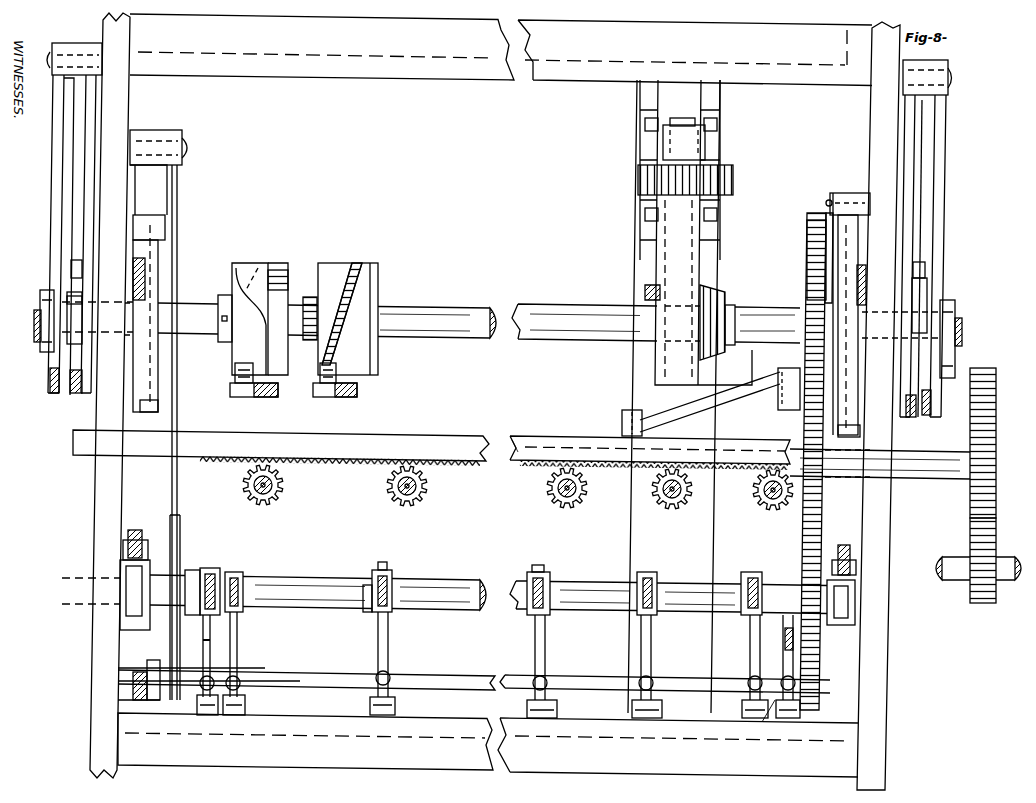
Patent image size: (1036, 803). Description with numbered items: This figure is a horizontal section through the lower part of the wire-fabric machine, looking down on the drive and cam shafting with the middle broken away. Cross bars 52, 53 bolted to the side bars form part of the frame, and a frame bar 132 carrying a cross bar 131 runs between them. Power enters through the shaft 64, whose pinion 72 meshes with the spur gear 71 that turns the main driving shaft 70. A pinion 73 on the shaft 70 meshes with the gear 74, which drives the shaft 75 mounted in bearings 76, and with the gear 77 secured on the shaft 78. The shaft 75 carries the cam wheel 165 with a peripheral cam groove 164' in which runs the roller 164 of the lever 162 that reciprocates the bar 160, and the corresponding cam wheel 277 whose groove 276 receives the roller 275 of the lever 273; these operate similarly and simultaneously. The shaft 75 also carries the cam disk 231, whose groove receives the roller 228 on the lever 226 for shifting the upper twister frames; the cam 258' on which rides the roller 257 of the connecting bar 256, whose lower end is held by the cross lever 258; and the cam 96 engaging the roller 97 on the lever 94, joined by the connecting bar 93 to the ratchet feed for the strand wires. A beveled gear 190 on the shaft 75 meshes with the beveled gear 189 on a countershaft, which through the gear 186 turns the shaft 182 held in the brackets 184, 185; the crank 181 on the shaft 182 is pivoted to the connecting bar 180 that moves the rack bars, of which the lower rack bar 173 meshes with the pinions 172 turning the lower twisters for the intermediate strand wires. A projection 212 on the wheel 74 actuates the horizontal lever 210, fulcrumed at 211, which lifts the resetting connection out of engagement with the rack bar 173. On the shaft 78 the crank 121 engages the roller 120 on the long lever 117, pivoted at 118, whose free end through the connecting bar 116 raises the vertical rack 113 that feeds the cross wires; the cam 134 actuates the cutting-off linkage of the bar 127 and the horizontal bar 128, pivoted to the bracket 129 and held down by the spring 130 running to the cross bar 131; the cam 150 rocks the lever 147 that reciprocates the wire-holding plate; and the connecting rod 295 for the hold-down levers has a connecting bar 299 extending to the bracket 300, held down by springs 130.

The cross bar 52 is at (410, 78).
The cross bar 53 is at (322, 718).
The cross bar 131 is at (312, 673).
The connecting bar 116 is at (200, 684).
The vertical rack 113 is at (138, 672).
The lever 94 is at (52, 208).
The cross lever 258 is at (498, 247).
The cam 258' is at (500, 251).
The roller 257 is at (74, 300).
The cam 96 is at (45, 345).
The roller 97 is at (38, 322).
The connecting bar 93 is at (56, 395).
The connecting bar 256 is at (76, 396).
The pivot 118 is at (190, 160).
The roller 228 is at (160, 222).
The cam disk 231 is at (150, 295).
The lever 226 is at (158, 218).
The long lever 117 is at (178, 490).
The bearings 76 is at (425, 315).
The cam wheel 165 is at (242, 265).
The cam groove 164' is at (282, 306).
The roller 164 is at (222, 344).
The lever 162 is at (268, 397).
The cam wheel 277 is at (333, 270).
The groove 276 is at (358, 275).
The roller 275 is at (322, 375).
The lever 273 is at (355, 397).
The rack bar 173 is at (465, 445).
The pinion 172 is at (283, 493).
The frame bar 132 is at (636, 232).
The bracket 184 is at (670, 262).
The shaft 182 is at (682, 118).
The bracket 185 is at (700, 140).
The gear 186 is at (645, 180).
The beveled gear 189 is at (645, 292).
The beveled gear 190 is at (727, 300).
The shaft 75 is at (757, 320).
The crank 181 is at (756, 380).
The connecting bar 180 is at (684, 425).
The gear 77 is at (802, 548).
The projection 212 is at (808, 240).
The gear 74 is at (810, 258).
The horizontal lever 210 is at (830, 205).
The fulcrum 211 is at (836, 193).
The pinion 73 is at (830, 478).
The main driving shaft 70 is at (930, 470).
The spur gear 71 is at (993, 425).
The pinion 72 is at (985, 606).
The shaft 64 is at (955, 582).
The lever 147 is at (136, 530).
The cam 150 is at (135, 625).
The bar 160 is at (842, 625).
The shaft 78 is at (437, 585).
The connecting rod 295 is at (236, 582).
The roller 120 is at (194, 580).
The crank 121 is at (183, 536).
The horizontal bar 128 is at (380, 654).
The connecting bar 299 is at (206, 640).
The spring 130 is at (238, 680).
The bracket 129 is at (230, 716).
The bracket 300 is at (205, 728).
The cam 134 is at (383, 570).
The bar 127 is at (368, 590).